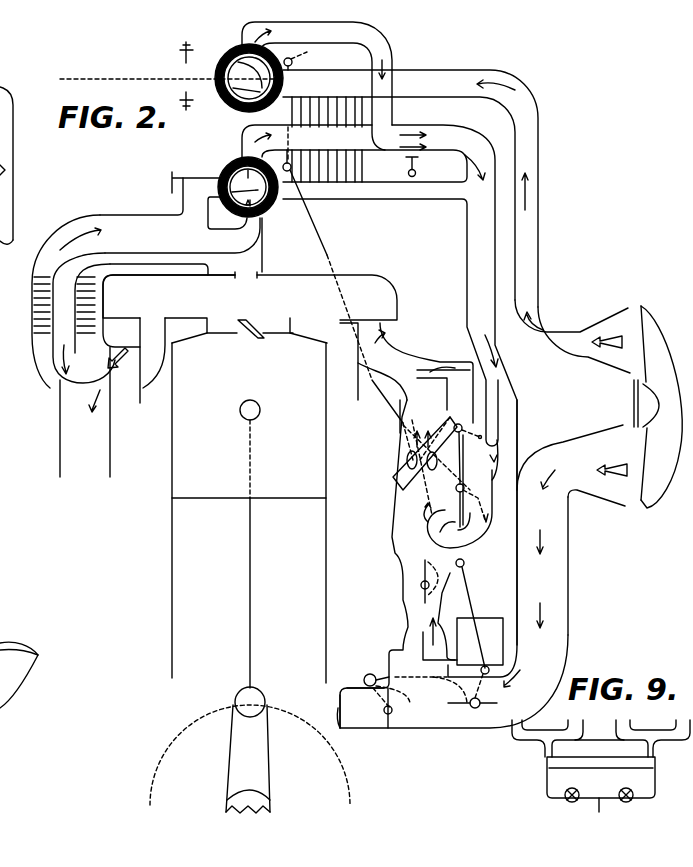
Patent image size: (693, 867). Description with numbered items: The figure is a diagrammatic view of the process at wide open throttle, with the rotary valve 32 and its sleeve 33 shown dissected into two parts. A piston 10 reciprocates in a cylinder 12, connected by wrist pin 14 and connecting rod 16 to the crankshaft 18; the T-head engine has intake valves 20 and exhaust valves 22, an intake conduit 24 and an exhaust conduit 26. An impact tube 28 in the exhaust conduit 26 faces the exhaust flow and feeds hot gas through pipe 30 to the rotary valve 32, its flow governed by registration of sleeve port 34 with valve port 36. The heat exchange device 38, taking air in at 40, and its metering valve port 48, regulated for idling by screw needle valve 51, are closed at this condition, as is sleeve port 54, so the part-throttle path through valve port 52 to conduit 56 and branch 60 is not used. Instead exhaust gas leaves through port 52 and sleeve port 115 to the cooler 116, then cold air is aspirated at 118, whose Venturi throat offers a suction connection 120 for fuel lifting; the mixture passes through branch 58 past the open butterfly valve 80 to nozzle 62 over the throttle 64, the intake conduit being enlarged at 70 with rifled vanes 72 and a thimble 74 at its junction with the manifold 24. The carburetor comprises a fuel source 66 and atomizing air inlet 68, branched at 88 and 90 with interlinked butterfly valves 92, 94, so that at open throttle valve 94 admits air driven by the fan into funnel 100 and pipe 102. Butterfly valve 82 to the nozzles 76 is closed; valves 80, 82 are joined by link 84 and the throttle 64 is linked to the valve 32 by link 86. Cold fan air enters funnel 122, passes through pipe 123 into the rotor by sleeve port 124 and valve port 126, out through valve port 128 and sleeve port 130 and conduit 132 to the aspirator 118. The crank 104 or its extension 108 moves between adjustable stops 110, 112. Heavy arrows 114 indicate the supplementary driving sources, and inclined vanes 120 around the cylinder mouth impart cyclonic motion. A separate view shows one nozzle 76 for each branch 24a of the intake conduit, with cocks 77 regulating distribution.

In FIG. 2, the piston 10 is at (321, 428).
In FIG. 2, the cylinder 12 is at (326, 455).
In FIG. 2, the wrist pin 14 is at (256, 409).
In FIG. 2, the connecting rod 16 is at (251, 572).
In FIG. 2, the crankshaft 18 is at (268, 765).
In FIG. 2, the intake valves 20 is at (358, 400).
In FIG. 2, the exhaust valves 22 is at (140, 400).
In FIG. 2, the intake conduit 24 is at (398, 347).
In FIG. 9, the intake conduit 24 is at (583, 757).
In FIG. 9, the branches of the intake conduit 24a is at (527, 733).
In FIG. 2, the exhaust conduit 26 is at (163, 360).
In FIG. 2, the impact tube 28 is at (83, 382).
In FIG. 2, the pipe 30 is at (252, 250).
In FIG. 2, the rotary valve 32 is at (224, 106).
In FIG. 2, the sleeve 33 is at (243, 112).
In FIG. 2, the sleeve port 34 is at (253, 225).
In FIG. 2, the valve port 36 is at (253, 202).
In FIG. 2, the heat exchange device 38 is at (97, 278).
In FIG. 2, the air intake 40 is at (55, 385).
In FIG. 2, the metering valve port 48 is at (227, 213).
In FIG. 2, the screw needle valve 51 is at (160, 193).
In FIG. 2, the valve port 52 is at (248, 187).
In FIG. 2, the sleeve port 54 is at (283, 192).
In FIG. 2, the conduit 56 is at (362, 200).
In FIG. 2, the branch 58 is at (492, 540).
In FIG. 2, the branch 60 is at (490, 421).
In FIG. 9, the branch 60 is at (601, 812).
In FIG. 2, the nozzle 62 is at (439, 517).
In FIG. 2, the throttle 64 is at (425, 575).
In FIG. 2, the source of fuel 66 is at (427, 654).
In FIG. 2, the atomizing air inlet 68 is at (402, 666).
In FIG. 2, the enlarged part 70 is at (395, 537).
In FIG. 2, the spiral or rifled vanes 72 is at (402, 487).
In FIG. 2, the flange or thimble 74 is at (403, 418).
In FIG. 2, the nozzles 76 is at (437, 375).
In FIG. 9, the nozzles 76 is at (547, 757).
In FIG. 9, the cocks 77 is at (566, 799).
In FIG. 2, the butterfly valve 80 is at (471, 479).
In FIG. 2, the butterfly valve 82 is at (488, 460).
In FIG. 2, the link 84 is at (466, 563).
In FIG. 2, the link 86 is at (330, 257).
In FIG. 2, the branch 88 is at (362, 717).
In FIG. 2, the branch 90 is at (467, 720).
In FIG. 2, the butterfly valve 92 is at (392, 718).
In FIG. 2, the butterfly valve 94 is at (498, 703).
In FIG. 2, the funnel 100 is at (605, 500).
In FIG. 2, the pipe 102 is at (12, 705).
In FIG. 2, the crank 104 is at (245, 141).
In FIG. 2, the extension 108 is at (195, 82).
In FIG. 2, the adjustable stop 110 is at (185, 93).
In FIG. 2, the adjustable stop 112 is at (182, 58).
In FIG. 2, the heavy arrows 114 is at (623, 453).
In FIG. 2, the sleeve port 115 is at (237, 153).
In FIG. 2, the cooler 116 is at (320, 148).
In FIG. 2, the aspirator 118 is at (401, 167).
In FIG. 2, the suction connection 120 is at (255, 350).
In FIG. 2, the funnel 122 is at (610, 309).
In FIG. 2, the pipe 123 is at (540, 203).
In FIG. 2, the sleeve port 124 is at (273, 83).
In FIG. 2, the valve port 126 is at (280, 92).
In FIG. 2, the valve port 128 is at (249, 78).
In FIG. 2, the sleeve port 130 is at (247, 45).
In FIG. 2, the conduit 132 is at (396, 72).